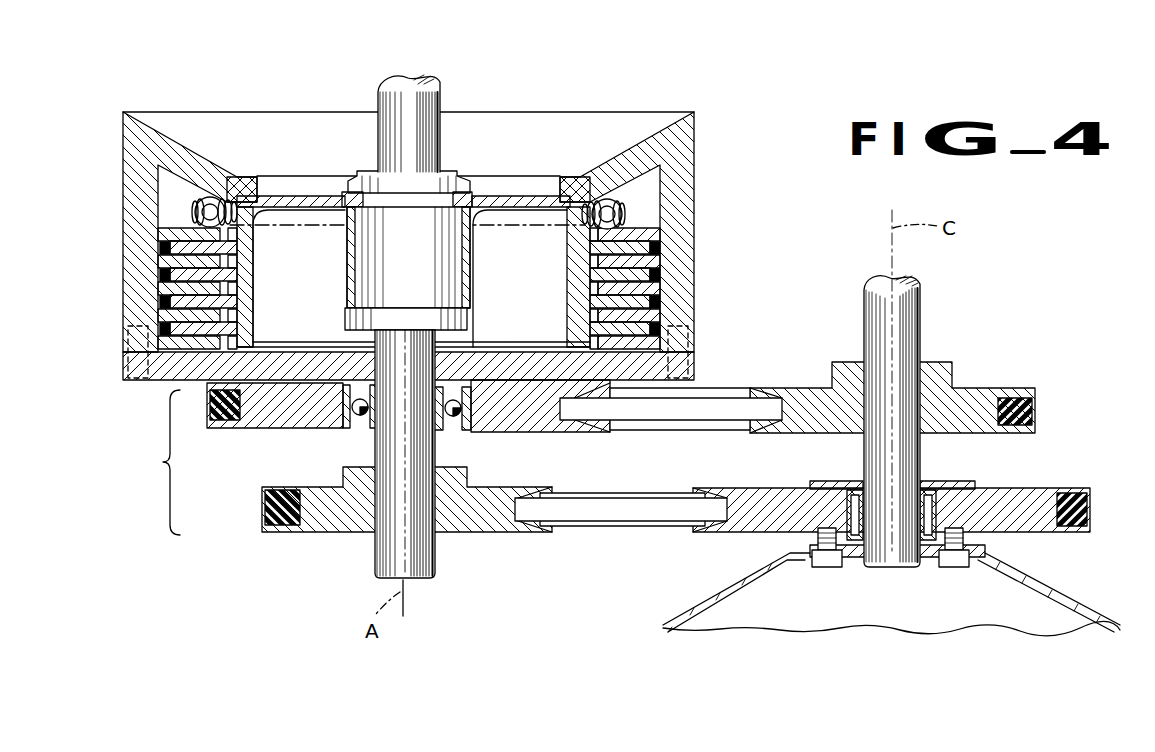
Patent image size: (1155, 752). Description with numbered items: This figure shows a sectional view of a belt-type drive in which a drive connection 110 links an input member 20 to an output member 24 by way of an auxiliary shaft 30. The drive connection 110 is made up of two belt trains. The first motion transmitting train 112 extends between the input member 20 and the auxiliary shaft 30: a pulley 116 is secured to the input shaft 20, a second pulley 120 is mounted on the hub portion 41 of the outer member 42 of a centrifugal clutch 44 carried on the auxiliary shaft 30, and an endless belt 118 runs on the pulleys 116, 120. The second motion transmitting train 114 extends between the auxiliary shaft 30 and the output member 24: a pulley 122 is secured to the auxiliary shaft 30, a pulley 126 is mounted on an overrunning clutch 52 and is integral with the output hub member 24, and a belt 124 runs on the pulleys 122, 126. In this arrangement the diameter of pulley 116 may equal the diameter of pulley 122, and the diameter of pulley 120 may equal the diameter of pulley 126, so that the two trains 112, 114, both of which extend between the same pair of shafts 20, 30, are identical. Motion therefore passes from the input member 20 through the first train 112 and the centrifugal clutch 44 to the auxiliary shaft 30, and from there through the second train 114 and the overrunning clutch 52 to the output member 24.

The input member 20 is at (922, 292).
The output member 24 is at (985, 550).
The auxiliary shaft 30 is at (378, 560).
The hub portion 41 is at (478, 430).
The outer member 42 is at (125, 252).
The centrifugal clutch 44 is at (112, 297).
The overrunning clutch 52 is at (930, 483).
The drive connection 110 is at (140, 462).
The first motion transmitting train 112 is at (719, 383).
The second motion transmitting train 114 is at (634, 534).
The pulley 116 is at (976, 393).
The endless belt 118 is at (703, 427).
The pulley 120 is at (308, 428).
The pulley 122 is at (460, 533).
The belt 124 is at (617, 495).
The pulley 126 is at (1012, 492).